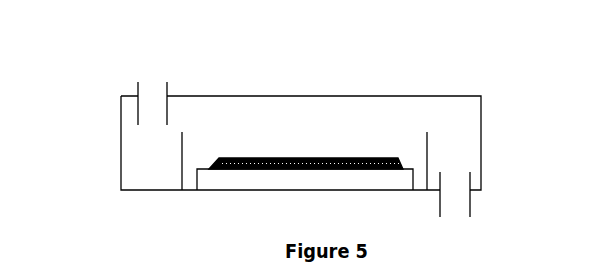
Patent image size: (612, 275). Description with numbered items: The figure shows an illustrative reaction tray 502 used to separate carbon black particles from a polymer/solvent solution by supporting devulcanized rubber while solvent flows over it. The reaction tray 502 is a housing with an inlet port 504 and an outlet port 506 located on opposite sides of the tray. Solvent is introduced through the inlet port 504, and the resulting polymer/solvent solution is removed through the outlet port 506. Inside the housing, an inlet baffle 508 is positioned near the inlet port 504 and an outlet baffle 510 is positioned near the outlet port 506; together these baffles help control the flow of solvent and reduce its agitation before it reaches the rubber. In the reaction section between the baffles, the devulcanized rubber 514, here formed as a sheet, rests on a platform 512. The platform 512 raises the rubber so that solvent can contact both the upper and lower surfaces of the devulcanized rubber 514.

The reaction tray 502 is at (432, 95).
The inlet port 504 is at (137, 83).
The outlet port 506 is at (470, 207).
The inlet baffle 508 is at (182, 155).
The outlet baffle 510 is at (427, 152).
The platform 512 is at (208, 170).
The devulcanized rubber 514 is at (305, 158).